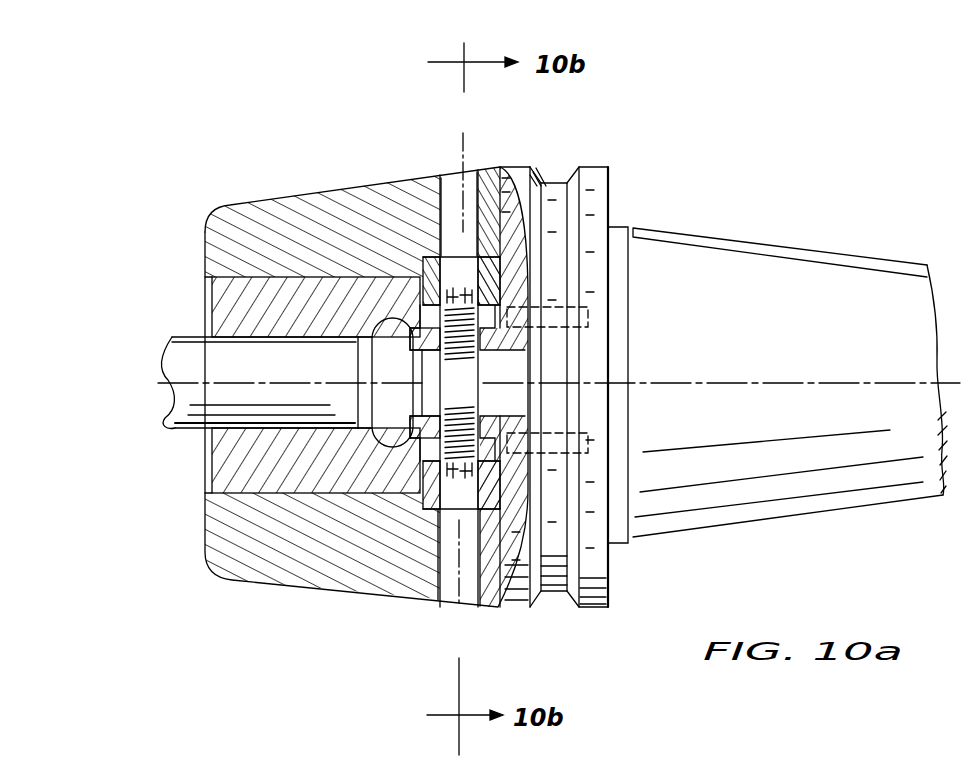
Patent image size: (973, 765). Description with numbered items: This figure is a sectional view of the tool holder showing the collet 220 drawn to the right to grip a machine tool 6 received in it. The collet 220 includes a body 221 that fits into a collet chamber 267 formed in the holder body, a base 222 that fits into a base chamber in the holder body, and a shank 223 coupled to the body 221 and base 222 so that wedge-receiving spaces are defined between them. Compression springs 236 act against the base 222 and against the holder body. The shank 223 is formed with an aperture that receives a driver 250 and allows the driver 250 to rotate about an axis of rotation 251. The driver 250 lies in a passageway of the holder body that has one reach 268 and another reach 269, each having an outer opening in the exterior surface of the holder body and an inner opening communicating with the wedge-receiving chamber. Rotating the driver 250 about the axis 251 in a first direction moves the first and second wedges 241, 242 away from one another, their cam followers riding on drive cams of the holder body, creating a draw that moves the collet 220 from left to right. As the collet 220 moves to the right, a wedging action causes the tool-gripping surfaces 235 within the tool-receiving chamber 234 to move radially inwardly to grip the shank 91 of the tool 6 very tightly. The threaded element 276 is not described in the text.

The tool 6 is at (172, 442).
The shank 91 is at (200, 350).
The collet 220 is at (200, 284).
The body 221 is at (345, 487).
The base 222 is at (517, 470).
The shank 223 is at (483, 413).
The tool-receiving chamber 234 is at (360, 338).
The tool-gripping surface 235 is at (283, 427).
The compression springs 236 is at (553, 307).
The first wedge 241 is at (427, 260).
The second wedge 242 is at (430, 502).
The driver 250 is at (467, 367).
The axis of rotation 251 is at (467, 145).
The collet chamber 267 is at (300, 493).
The reach 268 is at (450, 212).
The reach 269 is at (450, 590).
The threaded screw shank 276 is at (466, 383).